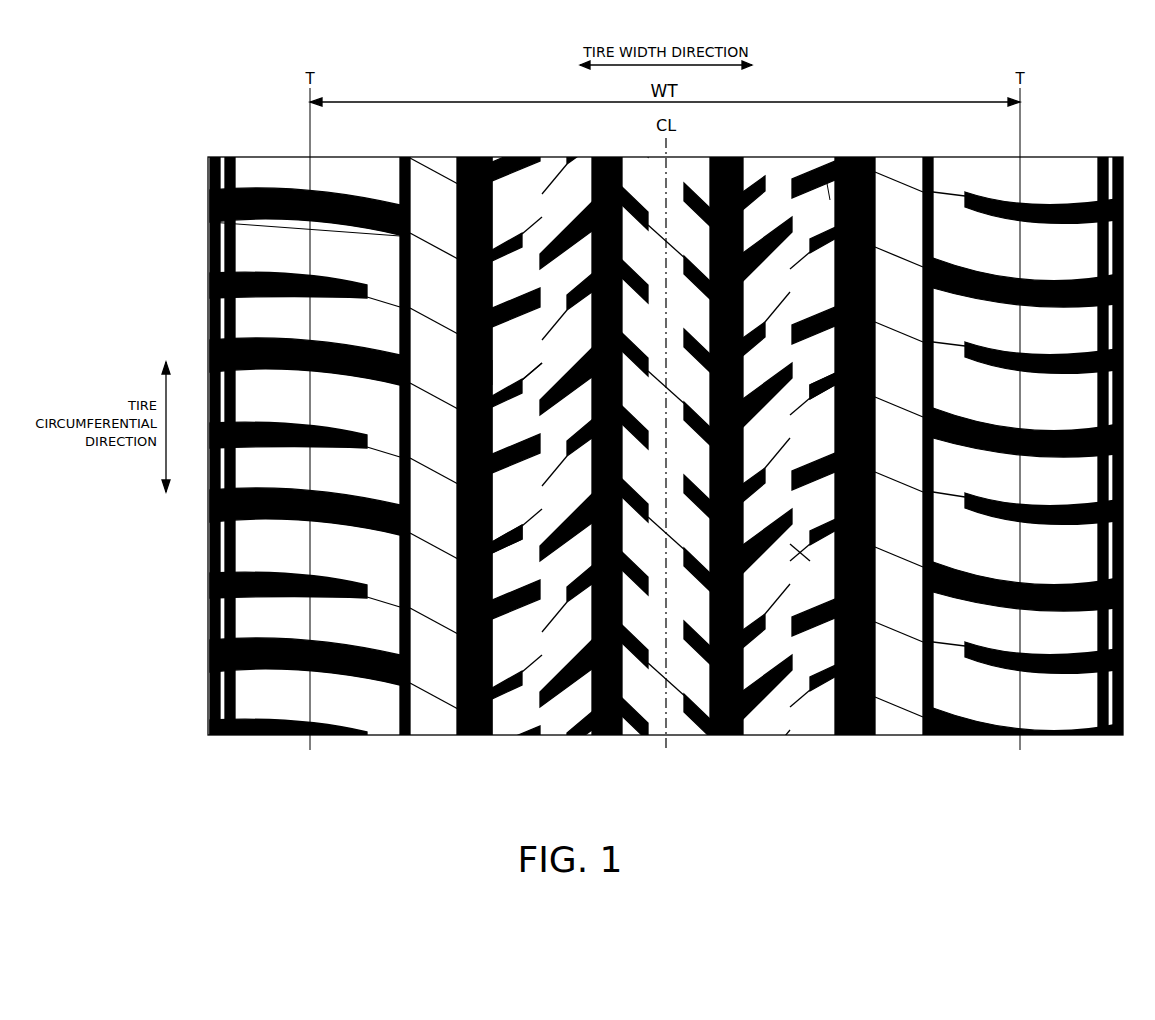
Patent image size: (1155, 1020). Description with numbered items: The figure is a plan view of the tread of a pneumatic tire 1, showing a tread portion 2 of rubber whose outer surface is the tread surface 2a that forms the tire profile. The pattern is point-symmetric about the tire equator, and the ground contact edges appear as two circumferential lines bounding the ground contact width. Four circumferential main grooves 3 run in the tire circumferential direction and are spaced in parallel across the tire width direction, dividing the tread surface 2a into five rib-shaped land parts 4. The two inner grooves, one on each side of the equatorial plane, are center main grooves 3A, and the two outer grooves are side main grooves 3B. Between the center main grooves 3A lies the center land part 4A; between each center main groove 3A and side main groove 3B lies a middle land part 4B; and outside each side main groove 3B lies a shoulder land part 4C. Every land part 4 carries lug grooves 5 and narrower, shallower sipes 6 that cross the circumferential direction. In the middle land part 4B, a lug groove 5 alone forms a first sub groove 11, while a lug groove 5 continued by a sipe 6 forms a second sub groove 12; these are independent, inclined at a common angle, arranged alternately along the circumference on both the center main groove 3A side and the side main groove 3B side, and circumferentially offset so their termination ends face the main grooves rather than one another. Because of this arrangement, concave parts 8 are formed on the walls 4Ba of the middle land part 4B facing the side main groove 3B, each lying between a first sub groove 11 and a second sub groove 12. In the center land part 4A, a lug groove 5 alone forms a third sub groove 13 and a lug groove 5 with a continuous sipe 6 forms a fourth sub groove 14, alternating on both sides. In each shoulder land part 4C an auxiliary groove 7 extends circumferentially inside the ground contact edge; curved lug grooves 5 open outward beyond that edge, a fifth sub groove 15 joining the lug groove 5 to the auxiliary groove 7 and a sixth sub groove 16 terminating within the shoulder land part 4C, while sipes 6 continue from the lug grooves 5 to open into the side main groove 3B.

The pneumatic tire 1 is at (1056, 97).
The tread portion 2 is at (792, 160).
The tread surface 2a is at (828, 190).
The circumferential main groove 3 is at (679, 426).
The center main groove 3A is at (605, 160).
The side main groove 3B is at (475, 160).
The land part 4 is at (666, 471).
The center land part 4A is at (648, 712).
The middle land part 4B is at (533, 712).
The wall 4Ba is at (495, 372).
The shoulder land part 4C is at (372, 712).
The lug groove 5 is at (302, 522).
The sipe 6 is at (435, 543).
The auxiliary groove 7 is at (403, 158).
The concave part 8 is at (490, 233).
The first sub groove 11 is at (576, 372).
The second sub groove 12 is at (578, 442).
The third sub groove 13 is at (638, 284).
The fourth sub groove 14 is at (696, 408).
The fifth sub groove 15 is at (352, 672).
The sixth sub groove 16 is at (352, 598).